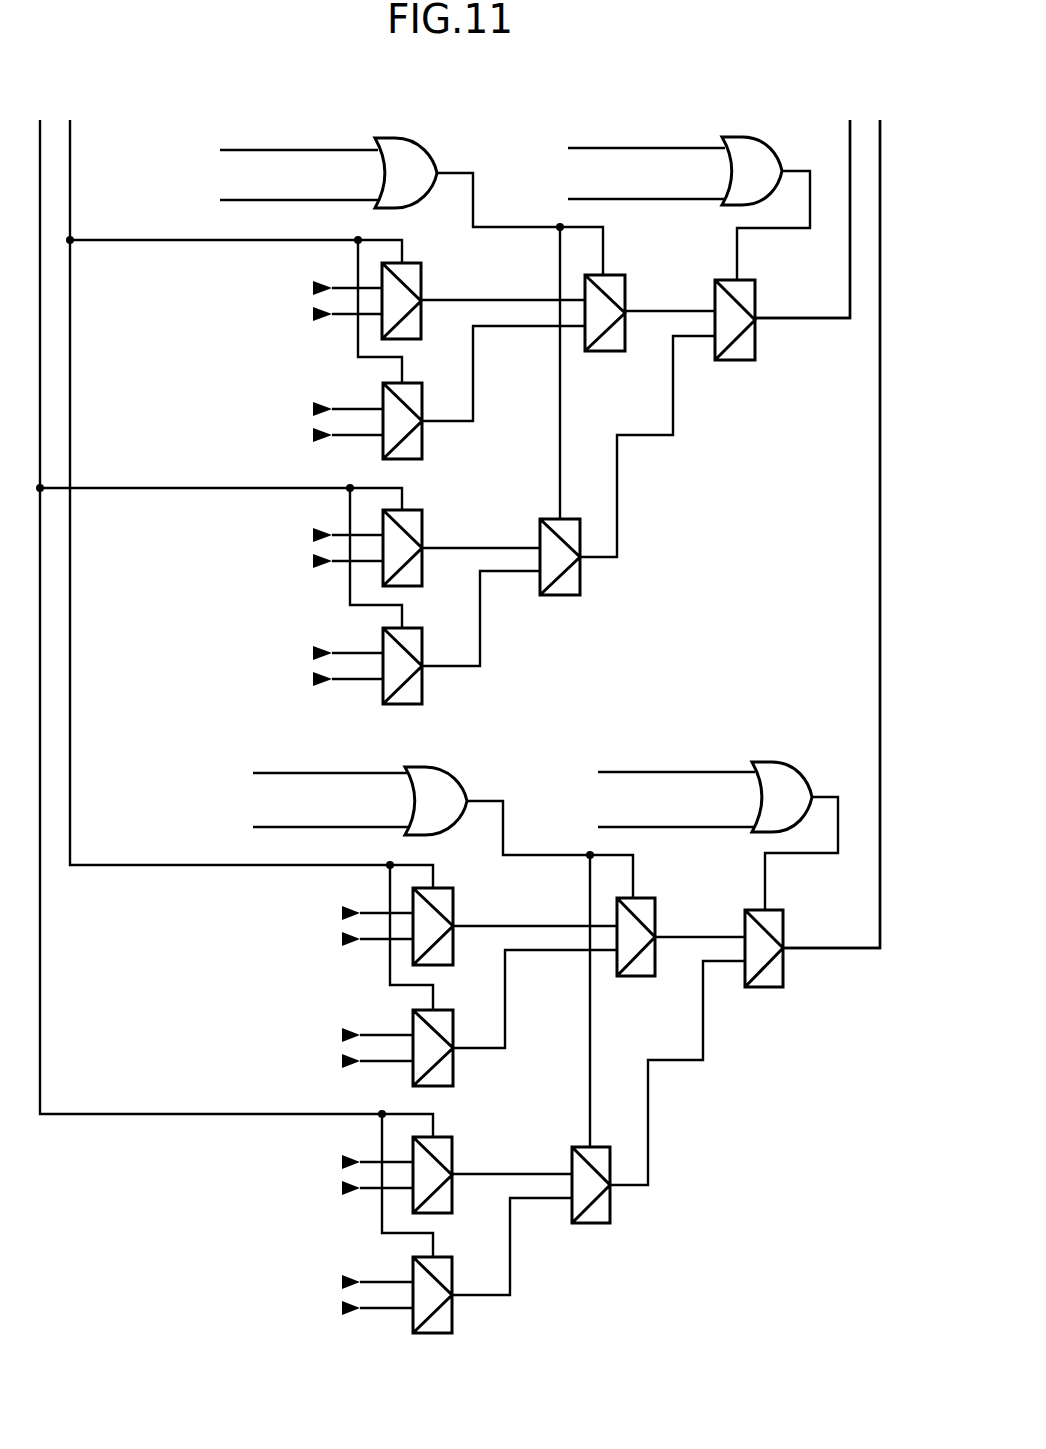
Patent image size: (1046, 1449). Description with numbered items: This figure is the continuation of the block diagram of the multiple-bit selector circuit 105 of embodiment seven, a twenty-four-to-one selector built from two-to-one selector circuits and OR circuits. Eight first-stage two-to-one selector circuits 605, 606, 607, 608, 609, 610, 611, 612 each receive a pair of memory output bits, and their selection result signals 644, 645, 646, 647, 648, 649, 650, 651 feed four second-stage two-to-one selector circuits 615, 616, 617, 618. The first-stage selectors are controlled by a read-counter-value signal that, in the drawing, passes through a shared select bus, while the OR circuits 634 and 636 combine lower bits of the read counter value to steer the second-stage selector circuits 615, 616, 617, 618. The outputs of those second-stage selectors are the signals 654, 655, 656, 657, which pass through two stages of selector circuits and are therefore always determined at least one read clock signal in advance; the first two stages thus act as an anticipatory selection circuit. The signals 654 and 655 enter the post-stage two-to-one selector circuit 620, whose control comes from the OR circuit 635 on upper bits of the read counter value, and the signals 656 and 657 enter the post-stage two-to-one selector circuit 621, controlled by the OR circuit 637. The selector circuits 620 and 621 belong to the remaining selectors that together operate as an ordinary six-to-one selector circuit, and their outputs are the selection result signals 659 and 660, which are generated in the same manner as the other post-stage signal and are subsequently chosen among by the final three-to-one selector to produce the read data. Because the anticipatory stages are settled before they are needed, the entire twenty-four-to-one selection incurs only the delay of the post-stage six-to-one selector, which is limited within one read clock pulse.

The multiple-bit selector circuit 105 is at (597, 74).
The 2-to-1 selector circuit 605 is at (408, 263).
The 2-to-1 selector circuit 606 is at (411, 379).
The 2-to-1 selector circuit 607 is at (408, 506).
The 2-to-1 selector circuit 608 is at (414, 625).
The 2-to-1 selector circuit 609 is at (441, 883).
The 2-to-1 selector circuit 610 is at (441, 1006).
The 2-to-1 selector circuit 611 is at (441, 1132).
The 2-to-1 selector circuit 612 is at (441, 1253).
The 2-to-1 selector circuit 615 is at (610, 271).
The 2-to-1 selector circuit 616 is at (561, 511).
The 2-to-1 selector circuit 617 is at (646, 893).
The 2-to-1 selector circuit 618 is at (596, 1139).
The 2-to-1 selector circuit 620 is at (744, 281).
The 2-to-1 selector circuit 621 is at (769, 905).
The OR circuit 634 is at (385, 138).
The OR circuit 635 is at (740, 134).
The OR circuit 636 is at (426, 767).
The OR circuit 637 is at (779, 762).
The selection result signal 644 is at (514, 300).
The selection result signal 645 is at (512, 328).
The selection result signal 646 is at (508, 544).
The selection result signal 647 is at (510, 574).
The selection result signal 648 is at (539, 919).
The selection result signal 649 is at (541, 953).
The selection result signal 650 is at (539, 1167).
The selection result signal 651 is at (541, 1201).
The selection result signal 654 is at (664, 304).
The selection result signal 655 is at (657, 437).
The selection result signal 656 is at (697, 934).
The selection result signal 657 is at (687, 1062).
The selection result signal 659 is at (848, 146).
The selection result signal 660 is at (876, 449).